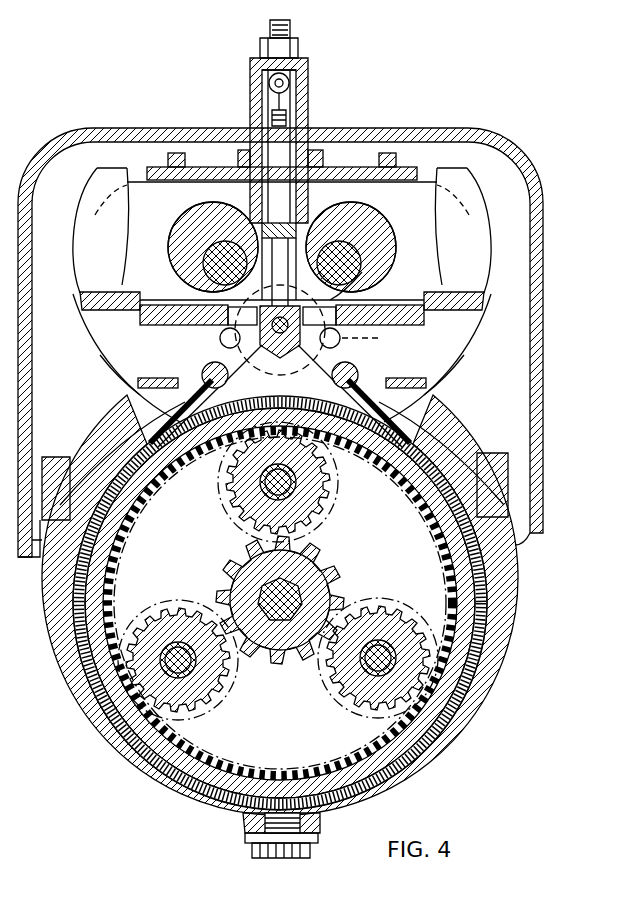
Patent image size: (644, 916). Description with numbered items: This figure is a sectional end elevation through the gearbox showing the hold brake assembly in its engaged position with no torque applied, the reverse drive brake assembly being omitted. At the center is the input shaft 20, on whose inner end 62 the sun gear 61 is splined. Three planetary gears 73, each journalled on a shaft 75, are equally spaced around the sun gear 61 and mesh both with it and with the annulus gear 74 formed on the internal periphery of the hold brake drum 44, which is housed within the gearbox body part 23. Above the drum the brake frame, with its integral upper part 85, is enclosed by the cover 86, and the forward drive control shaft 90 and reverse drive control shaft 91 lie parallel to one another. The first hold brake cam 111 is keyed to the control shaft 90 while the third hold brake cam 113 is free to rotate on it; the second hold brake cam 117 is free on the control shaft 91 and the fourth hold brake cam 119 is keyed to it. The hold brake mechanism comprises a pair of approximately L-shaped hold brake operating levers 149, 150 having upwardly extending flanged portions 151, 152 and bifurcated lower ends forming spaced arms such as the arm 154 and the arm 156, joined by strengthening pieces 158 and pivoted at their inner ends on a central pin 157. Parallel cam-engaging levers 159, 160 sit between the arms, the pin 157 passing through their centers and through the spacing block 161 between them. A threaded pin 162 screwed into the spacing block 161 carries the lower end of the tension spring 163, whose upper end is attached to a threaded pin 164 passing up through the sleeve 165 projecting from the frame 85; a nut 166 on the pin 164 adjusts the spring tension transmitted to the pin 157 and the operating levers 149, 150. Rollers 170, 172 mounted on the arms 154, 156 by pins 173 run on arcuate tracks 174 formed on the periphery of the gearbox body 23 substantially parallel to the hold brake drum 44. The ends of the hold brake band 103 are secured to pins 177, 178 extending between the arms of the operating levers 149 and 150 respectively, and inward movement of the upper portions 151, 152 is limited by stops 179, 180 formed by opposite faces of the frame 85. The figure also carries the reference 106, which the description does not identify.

The input shaft 20 is at (238, 566).
The gearbox body part 23 is at (243, 820).
The hold brake drum 44 is at (112, 527).
The sun gear 61 is at (322, 560).
The inner end of the input shaft 62 is at (302, 592).
The planetary gear 73 is at (328, 500).
The annulus gear 74 is at (392, 560).
The shaft 75 is at (260, 484).
The upper part of the frame 85 is at (358, 170).
The cover 86 is at (352, 128).
The forward drive control shaft 90 is at (204, 262).
The reverse drive control shaft 91 is at (378, 226).
The hold brake band 103 is at (147, 440).
The housing lug 106 is at (103, 450).
The first hold brake cam 111 is at (175, 236).
The third hold brake cam 113 is at (238, 195).
The second hold brake cam 117 is at (340, 208).
The fourth hold brake cam 119 is at (360, 262).
The hold brake operating lever 149 is at (93, 349).
The hold brake operating lever 150 is at (473, 349).
The upwardly extending flanged portion 151 is at (90, 271).
The upwardly extending flanged portion 152 is at (478, 272).
The arm 154 is at (120, 373).
The arm 156 is at (446, 373).
The central pin 157 is at (278, 360).
The strengthening piece 158 is at (125, 400).
The cam-engaging lever 159 is at (140, 316).
The cam-engaging lever 160 is at (270, 288).
The spacing block 161 is at (345, 340).
The threaded pin 162 is at (364, 276).
The tension spring 163 is at (250, 112).
The threaded pin 164 is at (292, 28).
The sleeve 165 is at (290, 88).
The nut 166 is at (300, 47).
The roller 170 is at (220, 338).
The roller 172 is at (405, 378).
The pin 173 is at (160, 378).
The arcuate track 174 is at (432, 432).
The pin 177 is at (205, 370).
The pin 178 is at (358, 372).
The stop 179 is at (168, 160).
The stop 180 is at (396, 163).